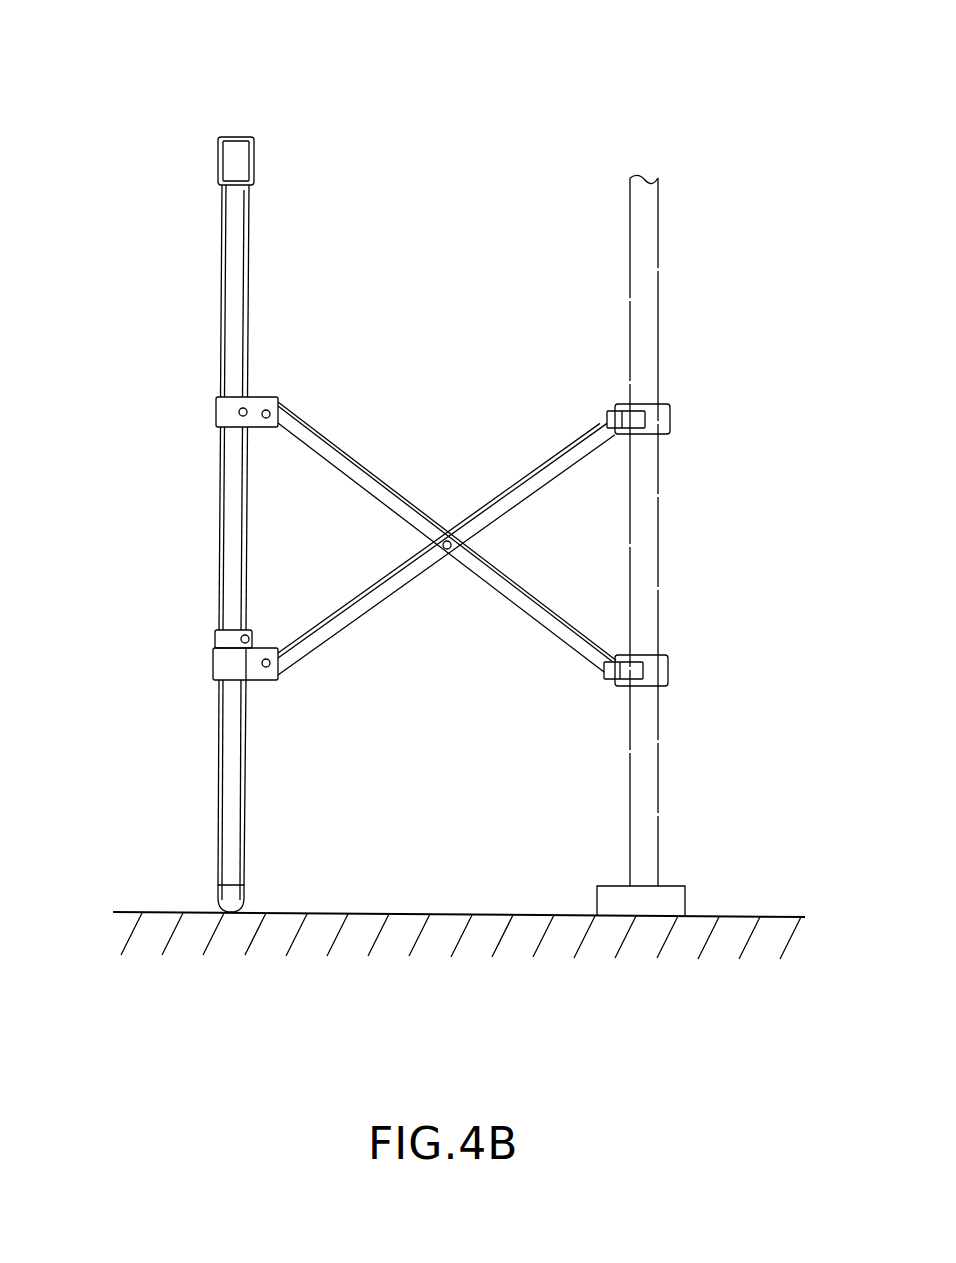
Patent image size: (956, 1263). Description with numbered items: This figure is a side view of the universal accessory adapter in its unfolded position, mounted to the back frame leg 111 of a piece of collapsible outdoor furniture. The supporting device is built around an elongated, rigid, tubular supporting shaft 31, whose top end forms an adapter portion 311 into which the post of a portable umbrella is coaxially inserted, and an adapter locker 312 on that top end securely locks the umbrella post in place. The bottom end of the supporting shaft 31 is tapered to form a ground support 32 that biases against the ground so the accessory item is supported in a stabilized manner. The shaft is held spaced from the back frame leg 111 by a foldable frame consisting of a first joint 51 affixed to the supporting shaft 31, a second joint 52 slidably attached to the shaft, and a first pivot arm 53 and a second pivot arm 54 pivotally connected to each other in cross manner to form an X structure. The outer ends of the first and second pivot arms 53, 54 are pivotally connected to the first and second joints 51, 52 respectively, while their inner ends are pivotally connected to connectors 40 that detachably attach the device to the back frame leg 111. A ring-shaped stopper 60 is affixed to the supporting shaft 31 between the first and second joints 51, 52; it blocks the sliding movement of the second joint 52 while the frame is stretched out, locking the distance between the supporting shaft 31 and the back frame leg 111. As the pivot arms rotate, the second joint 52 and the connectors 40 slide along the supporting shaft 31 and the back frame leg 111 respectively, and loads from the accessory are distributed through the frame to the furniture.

The back frame leg 111 is at (648, 270).
The supporting shaft 31 is at (232, 762).
The adapter portion 311 is at (212, 207).
The adapter locker 312 is at (232, 162).
The ground support 32 is at (225, 900).
The connector 40 is at (655, 418).
The first joint 51 is at (235, 413).
The second joint 52 is at (230, 663).
The first pivot arm 53 is at (365, 487).
The second pivot arm 54 is at (385, 585).
The stopper 60 is at (215, 638).